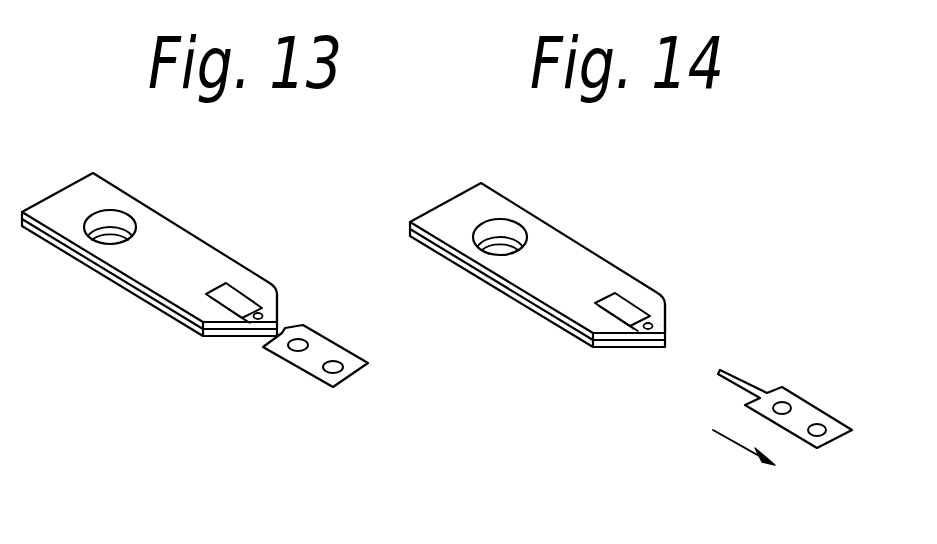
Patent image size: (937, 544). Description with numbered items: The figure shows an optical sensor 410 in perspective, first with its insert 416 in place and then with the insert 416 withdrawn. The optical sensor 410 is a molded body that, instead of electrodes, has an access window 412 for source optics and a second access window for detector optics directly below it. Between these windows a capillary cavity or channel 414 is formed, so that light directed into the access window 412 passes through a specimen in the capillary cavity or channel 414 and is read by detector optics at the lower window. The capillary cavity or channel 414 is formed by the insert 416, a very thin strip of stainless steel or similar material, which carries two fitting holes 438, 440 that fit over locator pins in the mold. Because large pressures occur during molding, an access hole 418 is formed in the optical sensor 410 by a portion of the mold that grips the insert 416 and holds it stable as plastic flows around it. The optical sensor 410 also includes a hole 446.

In FIG. 13, the optical sensor 410 is at (201, 207).
In FIG. 14, the optical sensor 410 is at (633, 245).
In FIG. 13, the access window 412 is at (263, 315).
In FIG. 14, the access window 412 is at (655, 323).
In FIG. 14, the capillary cavity or channel 414 is at (662, 333).
In FIG. 13, the insert 416 is at (355, 371).
In FIG. 14, the insert 416 is at (828, 413).
In FIG. 13, the access hole 418 is at (234, 296).
In FIG. 14, the access hole 418 is at (640, 307).
In FIG. 13, the fitting hole 438 is at (300, 340).
In FIG. 14, the fitting hole 438 is at (785, 405).
In FIG. 13, the fitting hole 440 is at (338, 366).
In FIG. 14, the fitting hole 440 is at (820, 435).
In FIG. 13, the hole 446 is at (100, 231).
In FIG. 14, the hole 446 is at (512, 230).